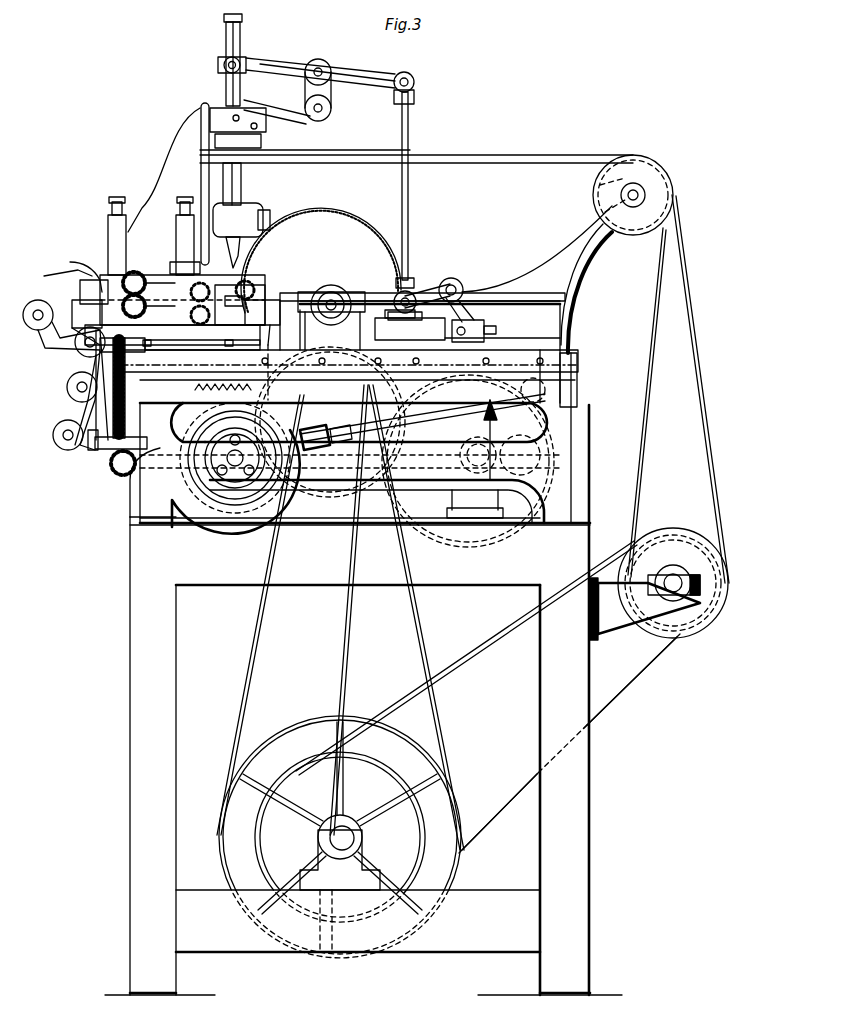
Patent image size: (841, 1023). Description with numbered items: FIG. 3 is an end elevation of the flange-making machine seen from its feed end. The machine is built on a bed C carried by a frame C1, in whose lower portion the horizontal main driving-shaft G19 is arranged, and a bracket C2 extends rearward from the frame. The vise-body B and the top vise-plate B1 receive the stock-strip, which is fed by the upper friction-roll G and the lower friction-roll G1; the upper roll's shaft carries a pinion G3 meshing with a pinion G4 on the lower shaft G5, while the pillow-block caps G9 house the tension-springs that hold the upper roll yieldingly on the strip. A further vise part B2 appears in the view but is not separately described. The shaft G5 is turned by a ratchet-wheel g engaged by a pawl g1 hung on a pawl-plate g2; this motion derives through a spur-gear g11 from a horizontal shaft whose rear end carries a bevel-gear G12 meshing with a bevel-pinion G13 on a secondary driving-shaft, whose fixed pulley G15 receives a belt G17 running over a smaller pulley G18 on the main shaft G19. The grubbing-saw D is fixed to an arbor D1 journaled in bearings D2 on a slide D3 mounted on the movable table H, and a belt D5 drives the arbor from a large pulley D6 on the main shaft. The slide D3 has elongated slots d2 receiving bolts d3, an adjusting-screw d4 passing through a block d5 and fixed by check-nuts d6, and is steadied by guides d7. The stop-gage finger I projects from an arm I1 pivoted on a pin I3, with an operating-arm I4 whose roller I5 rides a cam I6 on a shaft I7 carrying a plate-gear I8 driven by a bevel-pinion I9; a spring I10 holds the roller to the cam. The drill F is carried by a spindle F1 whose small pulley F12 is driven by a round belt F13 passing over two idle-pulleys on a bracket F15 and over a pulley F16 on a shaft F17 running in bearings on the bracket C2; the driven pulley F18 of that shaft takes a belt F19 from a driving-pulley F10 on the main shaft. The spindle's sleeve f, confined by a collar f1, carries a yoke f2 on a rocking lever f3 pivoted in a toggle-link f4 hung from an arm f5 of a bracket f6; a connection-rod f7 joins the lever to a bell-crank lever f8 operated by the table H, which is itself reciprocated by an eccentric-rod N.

The bed C is at (392, 948).
The frame C1 is at (363, 674).
The bracket C2 is at (645, 609).
The grubbing-saw D is at (323, 352).
The arbor D1 is at (336, 292).
The bearings D2 is at (328, 288).
The slide D3 is at (380, 373).
The belt D5 is at (258, 608).
The large pulley D6 is at (340, 837).
The elongated slots d2 is at (412, 292).
The receiving-bolts d3 is at (394, 302).
The adjusting-screw d4 is at (488, 326).
The small block d5 is at (478, 313).
The check-nuts d6 is at (445, 341).
The guides d7 is at (277, 354).
The drill F is at (238, 262).
The drill-spindle F1 is at (242, 197).
The driving-pulley F10 is at (424, 834).
The small pulley F12 is at (266, 156).
The round belt F13 is at (436, 160).
The bracket F15 is at (595, 369).
The pulley F16 is at (728, 580).
The shaft F17 is at (690, 592).
The driven pulley F18 is at (712, 626).
The belt F19 is at (656, 660).
The sleeve f is at (241, 54).
The collar f1 is at (243, 26).
The yoke f2 is at (240, 72).
The rocking lever f3 is at (288, 62).
The toggle-link f4 is at (326, 60).
The arm f5 is at (290, 122).
The bracket f6 is at (200, 144).
The connection-rod f7 is at (402, 135).
The bell-crank lever f8 is at (449, 284).
The upper friction feed-roll G is at (190, 316).
The lower friction feed-roll G1 is at (190, 292).
The pinion G3 is at (136, 275).
The pinion G4 is at (160, 280).
The lower shaft G5 is at (440, 538).
The pillow-block caps G9 is at (110, 232).
The bevel-gear G12 is at (497, 432).
The bevel-pinion G13 is at (474, 446).
The fixed pulley G15 is at (460, 504).
The belt G17 is at (458, 598).
The smaller pulley G18 is at (352, 816).
The main driving-shaft G19 is at (356, 842).
The ratchet-wheel g is at (50, 320).
The pawl g1 is at (60, 275).
The pawl-plate g2 is at (80, 269).
The spur-gear g11 is at (108, 410).
The movable table H is at (543, 345).
The finger I is at (72, 306).
The arm I1 is at (125, 388).
The pivot bolt or pin I3 is at (80, 290).
The operating-arm I4 is at (200, 348).
The antifriction-roller I5 is at (80, 375).
The cam I6 is at (250, 389).
The shaft I7 is at (92, 448).
The plate-gear I8 is at (252, 500).
The bevel-pinion I9 is at (112, 468).
The spring I10 is at (246, 334).
The eccentric-rod N is at (422, 414).
The vise-body B is at (240, 305).
The top vise-plate B1 is at (228, 296).
The block B2 is at (262, 315).